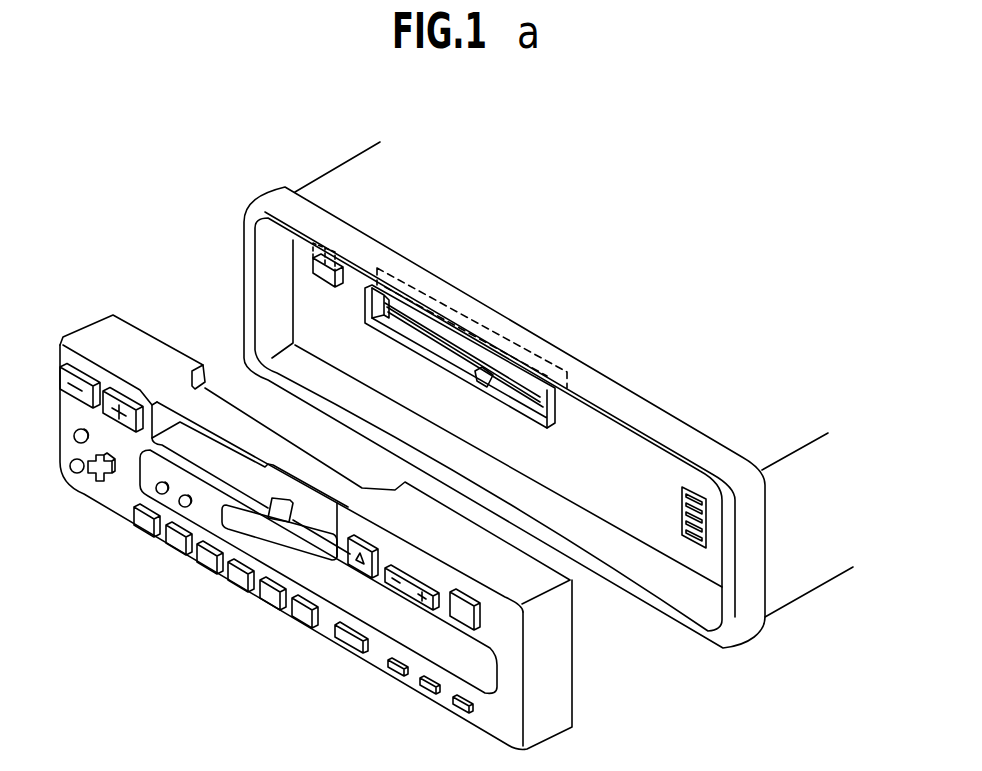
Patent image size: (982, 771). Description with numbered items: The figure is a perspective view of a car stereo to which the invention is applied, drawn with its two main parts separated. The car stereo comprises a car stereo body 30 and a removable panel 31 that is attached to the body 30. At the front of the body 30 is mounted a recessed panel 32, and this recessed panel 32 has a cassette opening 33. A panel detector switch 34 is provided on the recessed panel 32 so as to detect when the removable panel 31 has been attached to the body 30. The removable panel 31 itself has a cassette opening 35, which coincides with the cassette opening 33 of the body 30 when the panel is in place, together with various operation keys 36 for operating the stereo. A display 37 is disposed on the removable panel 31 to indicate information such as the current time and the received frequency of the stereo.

The car stereo body 30 is at (276, 157).
The removable panel 31 is at (369, 495).
The recessed panel 32 is at (582, 447).
The cassette opening 33 is at (441, 334).
The panel detector switch 34 is at (332, 259).
The cassette opening 35 is at (190, 452).
The operation keys 36 is at (457, 727).
The display 37 is at (466, 662).